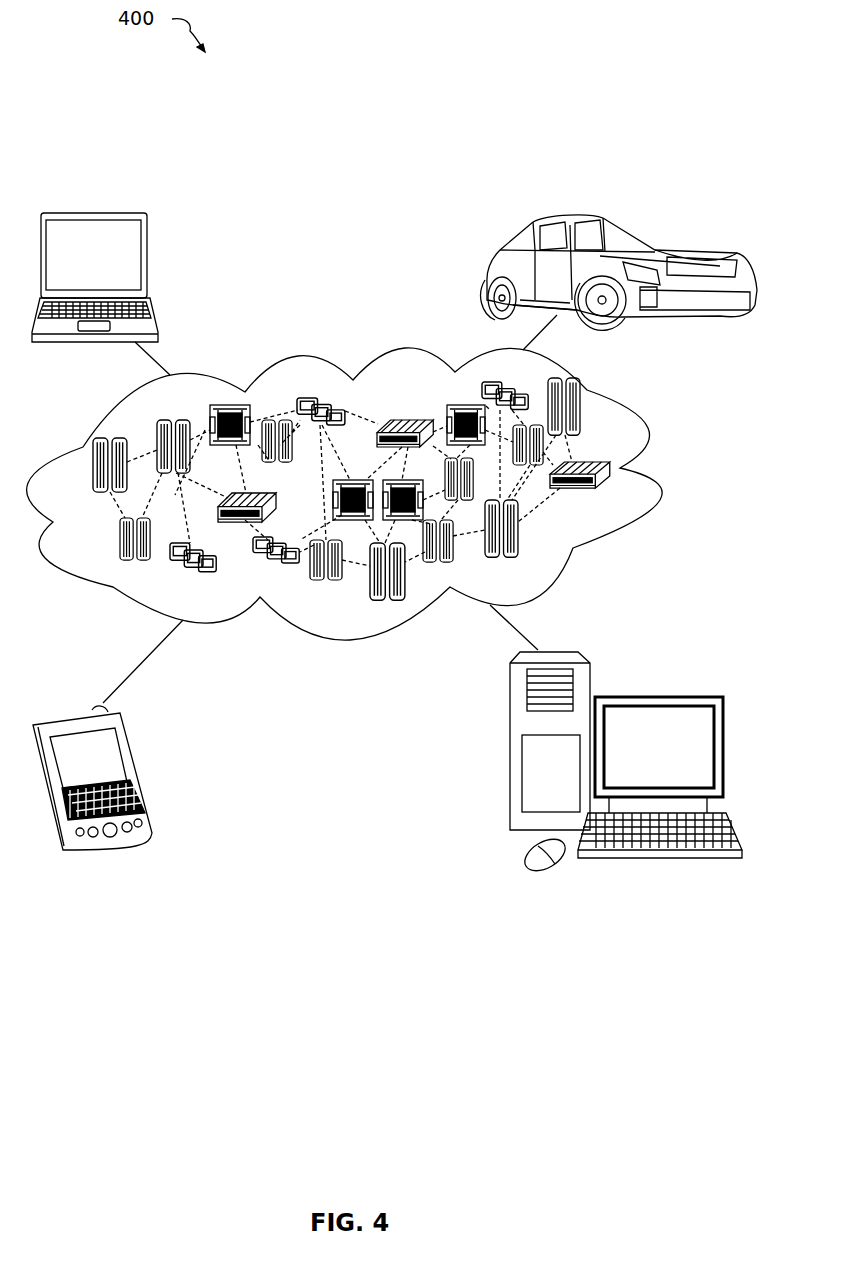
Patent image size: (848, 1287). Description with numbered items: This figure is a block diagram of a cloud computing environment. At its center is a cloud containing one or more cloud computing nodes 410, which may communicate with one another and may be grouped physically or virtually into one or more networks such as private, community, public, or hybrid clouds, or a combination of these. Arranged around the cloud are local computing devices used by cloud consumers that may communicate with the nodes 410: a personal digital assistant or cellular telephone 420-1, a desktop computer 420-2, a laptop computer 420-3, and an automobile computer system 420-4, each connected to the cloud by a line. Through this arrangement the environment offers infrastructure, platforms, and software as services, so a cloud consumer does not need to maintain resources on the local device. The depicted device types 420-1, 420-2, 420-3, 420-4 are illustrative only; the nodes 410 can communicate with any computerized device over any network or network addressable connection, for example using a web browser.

The cloud computing nodes 410 is at (612, 497).
The personal digital assistant (PDA) or cellular telephone 420-1 is at (143, 773).
The desktop computer 420-2 is at (657, 697).
The laptop computer 420-3 is at (149, 262).
The automobile computer system 420-4 is at (487, 272).